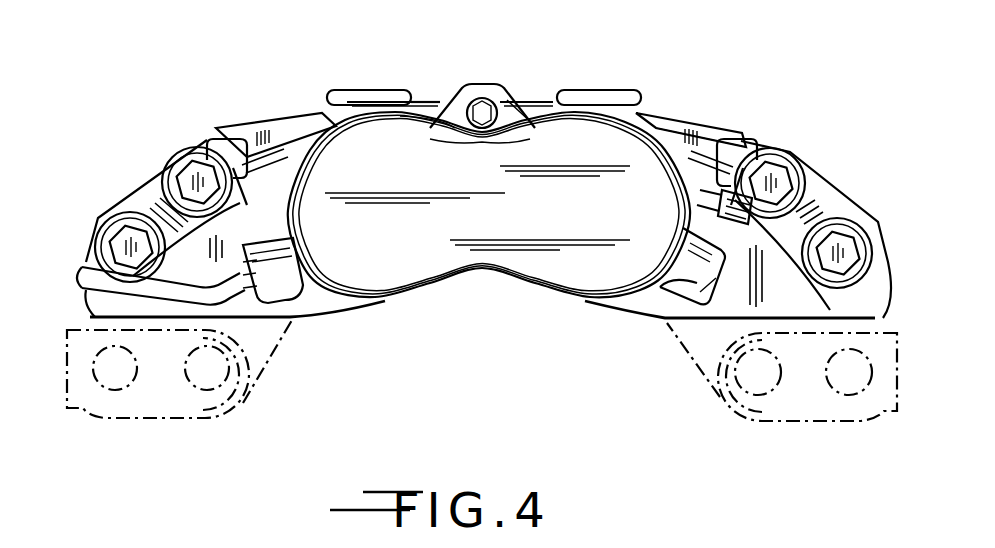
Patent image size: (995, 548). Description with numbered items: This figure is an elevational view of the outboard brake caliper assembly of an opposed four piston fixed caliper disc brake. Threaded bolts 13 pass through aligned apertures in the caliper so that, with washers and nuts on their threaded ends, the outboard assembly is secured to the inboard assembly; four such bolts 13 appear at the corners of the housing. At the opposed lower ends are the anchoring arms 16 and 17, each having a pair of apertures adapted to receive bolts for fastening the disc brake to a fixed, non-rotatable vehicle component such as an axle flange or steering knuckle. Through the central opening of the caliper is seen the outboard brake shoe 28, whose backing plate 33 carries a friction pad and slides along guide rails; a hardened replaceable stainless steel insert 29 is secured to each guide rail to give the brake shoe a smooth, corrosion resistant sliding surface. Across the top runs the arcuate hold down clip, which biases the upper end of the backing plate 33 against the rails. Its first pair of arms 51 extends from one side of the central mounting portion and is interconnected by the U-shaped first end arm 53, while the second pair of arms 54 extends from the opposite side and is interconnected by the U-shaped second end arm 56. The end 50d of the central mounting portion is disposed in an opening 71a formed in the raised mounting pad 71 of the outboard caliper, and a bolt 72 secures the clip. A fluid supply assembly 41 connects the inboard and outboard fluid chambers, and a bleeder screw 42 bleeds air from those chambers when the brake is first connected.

The threaded bolt 13 is at (128, 215).
The anchoring arm 16 is at (810, 417).
The anchoring arm 17 is at (170, 420).
The outboard brake shoe 28 is at (706, 108).
The hardened replaceable insert 29 is at (203, 139).
The backing plate 33 is at (270, 130).
The fluid supply assembly 41 is at (78, 268).
The bleeder screw 42 is at (730, 203).
The opposite end of central mounting portion 50d is at (460, 126).
The first arm 51 is at (557, 110).
The first end arm 53 is at (645, 112).
The second arm 54 is at (423, 100).
The second end arm 56 is at (322, 112).
The raised mounting pad 71 is at (522, 135).
The hole 71a is at (482, 128).
The bolt 72 is at (480, 87).